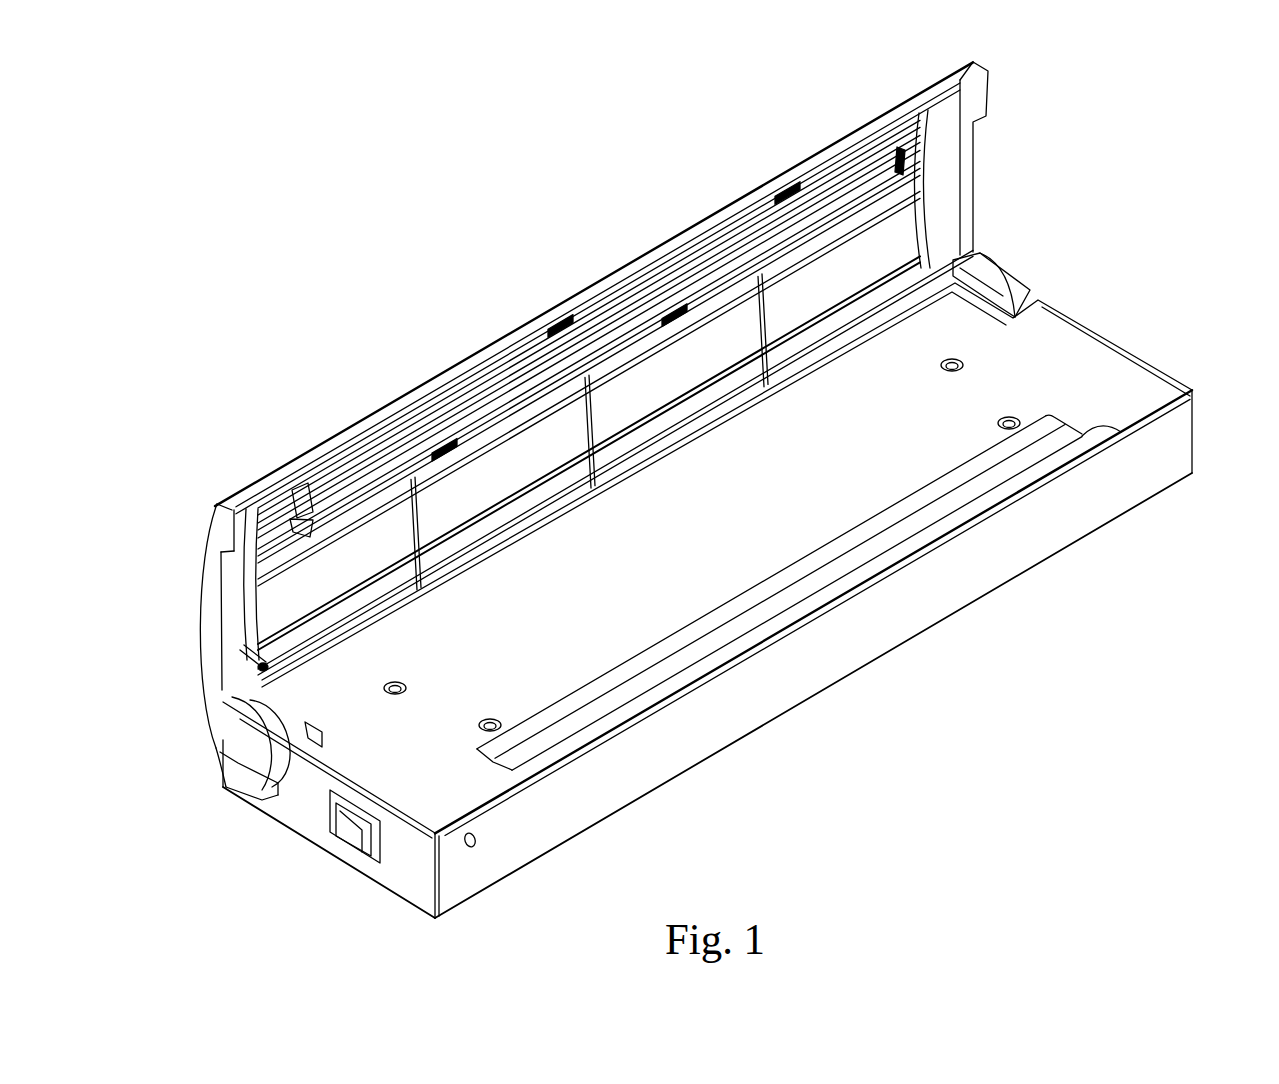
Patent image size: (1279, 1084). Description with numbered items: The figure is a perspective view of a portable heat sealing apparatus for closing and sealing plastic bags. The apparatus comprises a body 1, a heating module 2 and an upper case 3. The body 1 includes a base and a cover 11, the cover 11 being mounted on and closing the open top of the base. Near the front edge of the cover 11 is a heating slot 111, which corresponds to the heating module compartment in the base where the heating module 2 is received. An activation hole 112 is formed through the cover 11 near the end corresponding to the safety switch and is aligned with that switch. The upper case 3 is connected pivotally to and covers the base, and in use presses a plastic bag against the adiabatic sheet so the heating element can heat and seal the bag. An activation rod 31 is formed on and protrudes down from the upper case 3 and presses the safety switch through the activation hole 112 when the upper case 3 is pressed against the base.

The body 1 is at (748, 600).
The cover 11 is at (1107, 360).
The heating slot 111 is at (1123, 433).
The activation hole 112 is at (325, 765).
The heating module 2 is at (918, 545).
The upper case 3 is at (655, 431).
The activation rod 31 is at (258, 674).